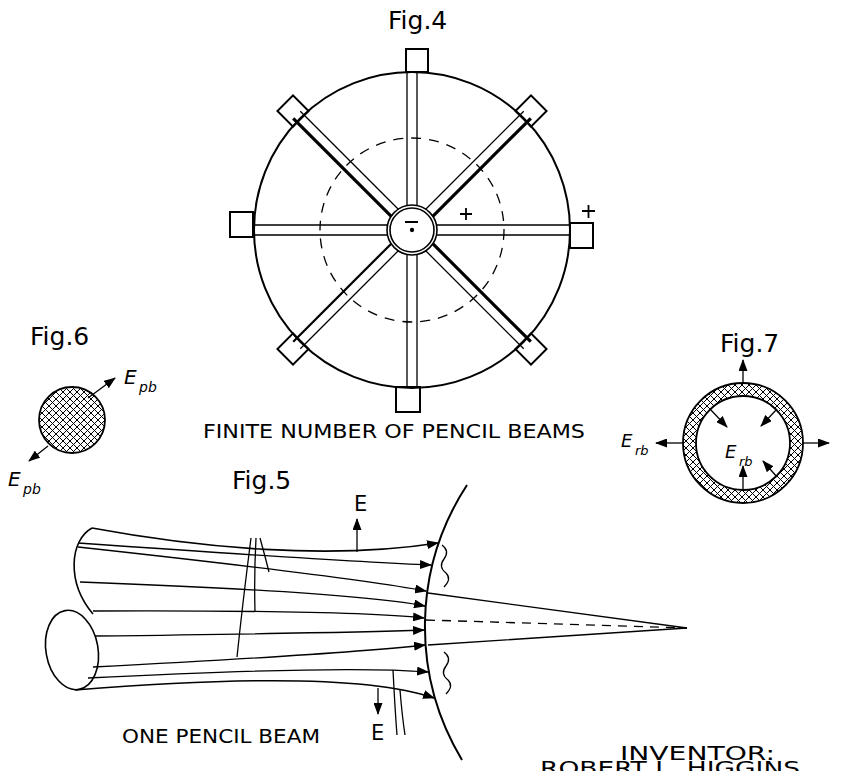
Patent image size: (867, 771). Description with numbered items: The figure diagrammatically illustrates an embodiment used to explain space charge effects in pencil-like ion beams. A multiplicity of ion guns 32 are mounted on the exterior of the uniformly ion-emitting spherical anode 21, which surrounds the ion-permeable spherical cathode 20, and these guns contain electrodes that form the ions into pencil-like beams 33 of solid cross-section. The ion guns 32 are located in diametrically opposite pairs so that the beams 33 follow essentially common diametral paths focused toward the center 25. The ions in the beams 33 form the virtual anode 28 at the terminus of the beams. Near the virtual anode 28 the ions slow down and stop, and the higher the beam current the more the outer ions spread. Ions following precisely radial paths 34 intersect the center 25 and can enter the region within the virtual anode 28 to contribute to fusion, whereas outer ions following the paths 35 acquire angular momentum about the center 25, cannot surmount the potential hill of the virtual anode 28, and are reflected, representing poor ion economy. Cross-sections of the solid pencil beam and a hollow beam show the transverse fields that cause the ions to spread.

In FIG. 4, the spherical cathode 20 is at (497, 193).
In FIG. 4, the spherical anode 21 is at (503, 98).
In FIG. 4, the center 25 is at (413, 229).
In FIG. 5, the center 25 is at (687, 627).
In FIG. 4, the virtual anode 28 is at (426, 198).
In FIG. 5, the virtual anode 28 is at (447, 528).
In FIG. 4, the ion gun 32 is at (430, 60).
In FIG. 4, the pencil-like beam 33 is at (421, 105).
In FIG. 6, the pencil-like beam 33 is at (68, 389).
In FIG. 5, the pencil-like beam 33 is at (181, 536).
In FIG. 5, the radial paths 34 is at (253, 588).
In FIG. 5, the paths of outer ions 35 is at (408, 719).